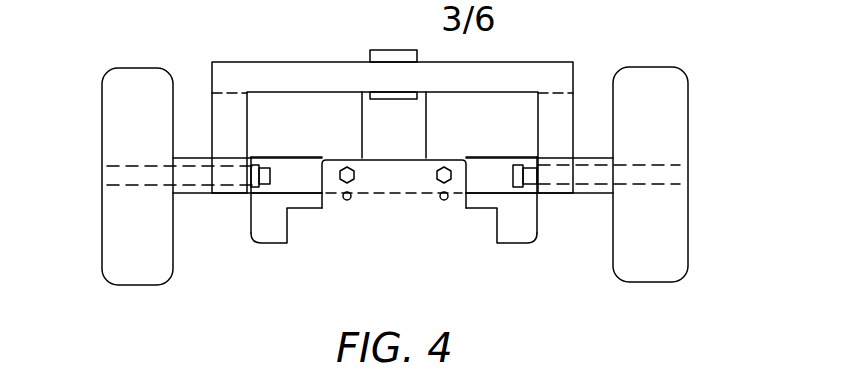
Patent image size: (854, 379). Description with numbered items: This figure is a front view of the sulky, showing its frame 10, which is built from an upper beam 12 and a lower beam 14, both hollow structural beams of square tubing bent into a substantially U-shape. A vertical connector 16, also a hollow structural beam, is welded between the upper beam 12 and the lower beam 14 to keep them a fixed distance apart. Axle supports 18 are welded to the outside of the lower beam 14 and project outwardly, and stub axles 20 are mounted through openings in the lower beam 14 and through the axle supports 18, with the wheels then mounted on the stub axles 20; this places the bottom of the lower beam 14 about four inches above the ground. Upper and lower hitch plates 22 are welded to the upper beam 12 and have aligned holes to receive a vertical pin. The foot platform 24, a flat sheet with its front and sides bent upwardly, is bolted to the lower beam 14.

The frame 10 is at (293, 82).
The upper beam 12 is at (522, 63).
The lower beam 14 is at (485, 167).
The vertical connector 16 is at (362, 131).
The axle support 18 is at (195, 194).
The stub axle 20 is at (118, 184).
The hitch plate 22 is at (394, 50).
The foot platform 24 is at (508, 244).